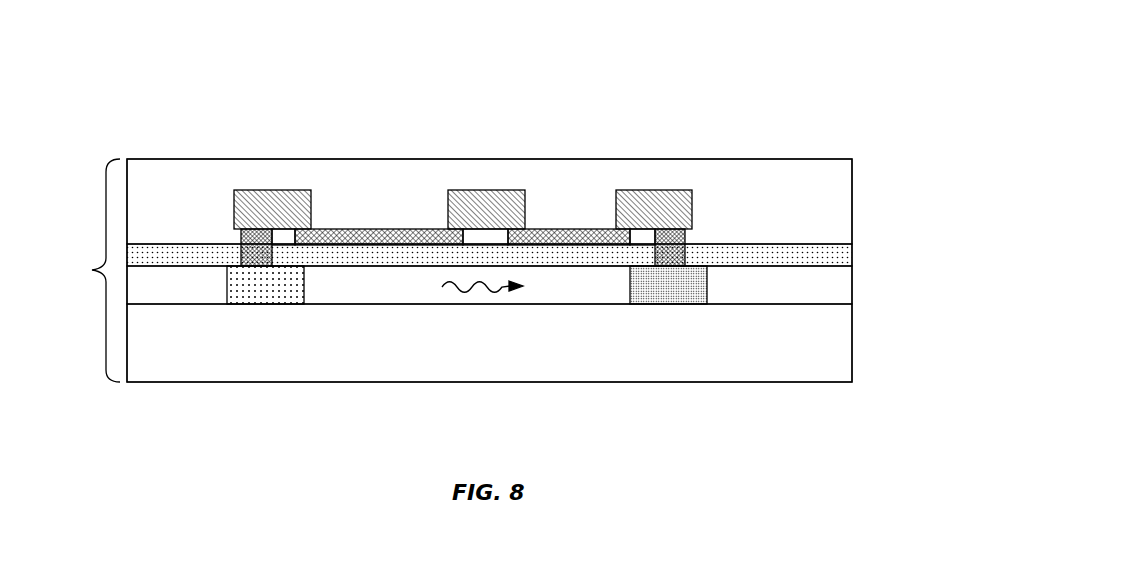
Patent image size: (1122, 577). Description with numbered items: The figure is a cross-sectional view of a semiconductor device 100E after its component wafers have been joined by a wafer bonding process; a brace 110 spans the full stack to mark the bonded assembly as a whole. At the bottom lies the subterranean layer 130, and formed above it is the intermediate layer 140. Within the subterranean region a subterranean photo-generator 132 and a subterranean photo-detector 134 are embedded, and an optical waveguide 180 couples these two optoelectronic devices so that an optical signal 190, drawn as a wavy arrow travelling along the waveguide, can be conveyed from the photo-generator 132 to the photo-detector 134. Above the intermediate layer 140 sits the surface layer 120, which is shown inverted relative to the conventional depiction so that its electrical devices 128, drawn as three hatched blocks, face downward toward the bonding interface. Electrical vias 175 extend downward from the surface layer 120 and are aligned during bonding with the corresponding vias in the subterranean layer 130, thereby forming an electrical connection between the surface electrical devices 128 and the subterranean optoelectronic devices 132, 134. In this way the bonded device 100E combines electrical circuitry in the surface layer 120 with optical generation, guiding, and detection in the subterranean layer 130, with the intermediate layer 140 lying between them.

The semiconductor device 100E is at (818, 65).
The device stack 110 is at (105, 163).
The surface layer 120 is at (852, 208).
The electrical devices 128 is at (270, 202).
The subterranean layer 130 is at (852, 353).
The subterranean photo-generator 132 is at (270, 292).
The subterranean photo-detector 134 is at (685, 293).
The intermediate layer 140 is at (852, 260).
The electrical vias 175 is at (242, 237).
The optical waveguide 180 is at (362, 229).
The optical signal 190 is at (497, 290).